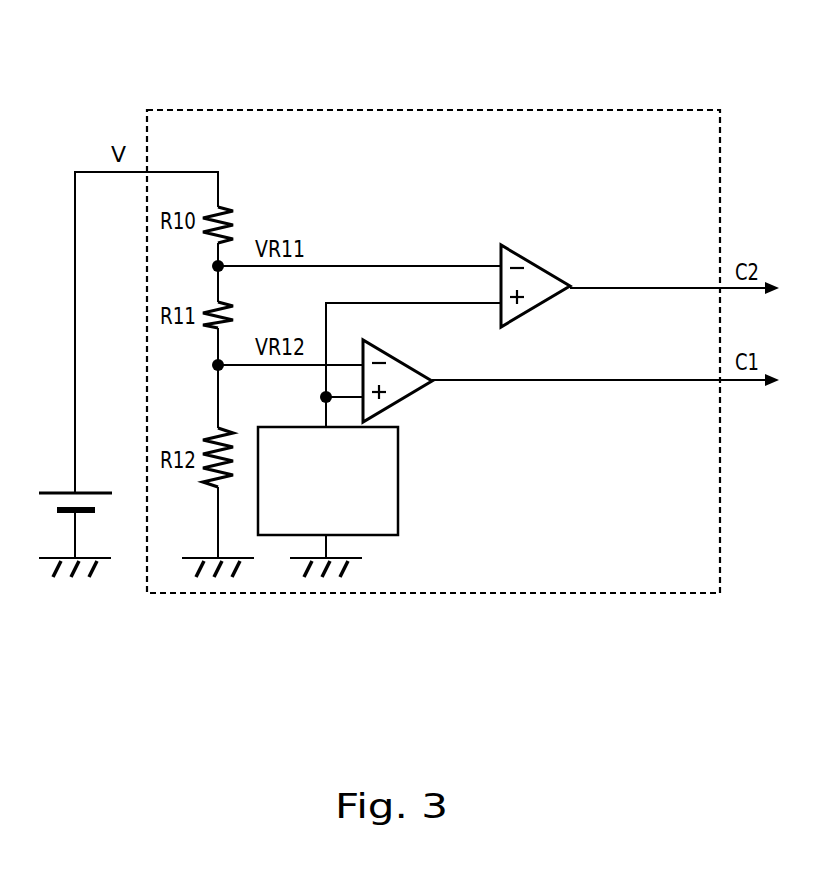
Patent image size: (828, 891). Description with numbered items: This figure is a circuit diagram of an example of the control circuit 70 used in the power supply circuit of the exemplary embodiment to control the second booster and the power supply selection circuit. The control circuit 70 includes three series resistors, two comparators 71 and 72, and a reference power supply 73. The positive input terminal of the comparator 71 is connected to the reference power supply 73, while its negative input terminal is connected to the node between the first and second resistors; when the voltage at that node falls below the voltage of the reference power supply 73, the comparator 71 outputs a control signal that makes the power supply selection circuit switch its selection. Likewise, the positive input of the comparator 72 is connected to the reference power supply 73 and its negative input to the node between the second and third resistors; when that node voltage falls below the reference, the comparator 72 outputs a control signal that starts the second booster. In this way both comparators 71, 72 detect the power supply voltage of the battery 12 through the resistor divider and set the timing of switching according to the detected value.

The battery 12 is at (66, 484).
The control circuit 70 is at (687, 110).
The comparator 71 is at (548, 268).
The comparator 72 is at (410, 364).
The reference power supply 73 is at (398, 490).